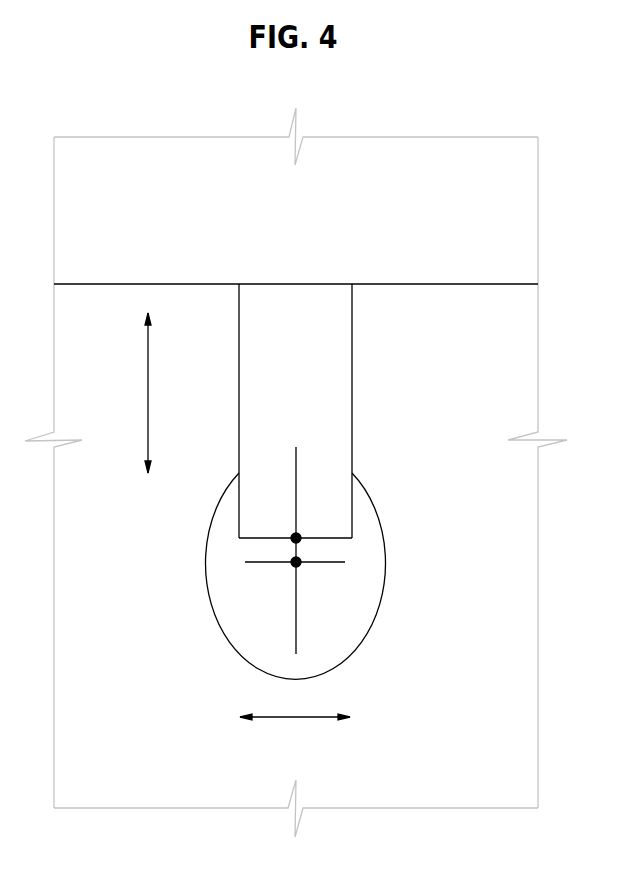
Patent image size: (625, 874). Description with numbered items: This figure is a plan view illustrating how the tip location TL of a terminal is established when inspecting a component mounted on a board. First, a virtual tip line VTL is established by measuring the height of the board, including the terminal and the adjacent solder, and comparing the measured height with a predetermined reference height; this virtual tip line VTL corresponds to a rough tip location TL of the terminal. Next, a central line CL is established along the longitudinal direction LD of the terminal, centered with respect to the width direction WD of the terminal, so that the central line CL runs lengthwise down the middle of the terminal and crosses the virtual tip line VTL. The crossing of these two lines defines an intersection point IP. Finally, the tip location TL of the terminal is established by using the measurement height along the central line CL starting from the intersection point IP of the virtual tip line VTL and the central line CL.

The longitudinal direction LD is at (135, 393).
The tip location TL is at (296, 538).
The intersection point IP is at (296, 562).
The virtual tip line VTL is at (338, 562).
The central line CL is at (296, 638).
The width direction WD is at (295, 732).